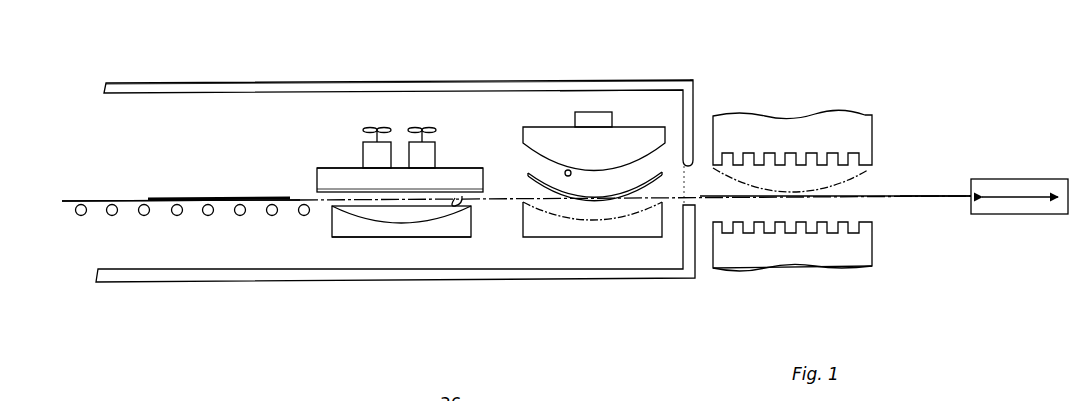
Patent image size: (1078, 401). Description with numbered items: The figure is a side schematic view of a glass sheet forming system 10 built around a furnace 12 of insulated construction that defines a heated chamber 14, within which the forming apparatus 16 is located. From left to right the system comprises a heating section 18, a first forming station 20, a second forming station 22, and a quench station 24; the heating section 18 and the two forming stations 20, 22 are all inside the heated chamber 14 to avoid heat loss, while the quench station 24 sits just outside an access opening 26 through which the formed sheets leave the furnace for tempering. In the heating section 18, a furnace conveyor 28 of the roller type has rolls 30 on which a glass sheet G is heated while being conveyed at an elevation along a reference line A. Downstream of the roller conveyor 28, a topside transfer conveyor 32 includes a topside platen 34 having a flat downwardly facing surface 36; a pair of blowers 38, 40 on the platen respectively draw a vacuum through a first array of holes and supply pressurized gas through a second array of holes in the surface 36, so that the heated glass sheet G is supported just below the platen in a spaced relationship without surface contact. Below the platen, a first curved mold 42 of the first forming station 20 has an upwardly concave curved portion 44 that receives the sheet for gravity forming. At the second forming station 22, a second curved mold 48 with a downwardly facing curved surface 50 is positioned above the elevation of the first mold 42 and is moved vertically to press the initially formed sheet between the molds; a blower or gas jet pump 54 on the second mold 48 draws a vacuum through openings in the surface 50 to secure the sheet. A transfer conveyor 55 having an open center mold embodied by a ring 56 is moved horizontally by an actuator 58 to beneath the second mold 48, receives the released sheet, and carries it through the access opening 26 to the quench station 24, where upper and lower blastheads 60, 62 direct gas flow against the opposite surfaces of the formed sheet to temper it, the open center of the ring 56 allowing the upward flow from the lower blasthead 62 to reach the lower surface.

The glass sheet forming system 10 is at (708, 60).
The furnace 12 is at (576, 77).
The heated chamber 14 is at (626, 103).
The apparatus 16 is at (530, 97).
The heating section 18 is at (252, 214).
The first forming station 20 is at (408, 254).
The second forming station 22 is at (580, 251).
The quench station 24 is at (796, 278).
The access opening 26 is at (692, 165).
The furnace conveyor 28 is at (186, 218).
The rolls 30 is at (148, 214).
The topside transfer conveyor 32 is at (325, 167).
The topside platen 34 is at (443, 170).
The downwardly facing surface 36 is at (455, 198).
The blower 38 is at (363, 150).
The blower 40 is at (437, 150).
The first curved mold 42 is at (422, 238).
The curved portion 44 is at (386, 224).
The second curved mold 48 is at (520, 130).
The downwardly facing surface 50 is at (567, 170).
The gas jet pump 54 is at (610, 120).
The transfer conveyor 55 is at (874, 195).
The transfer ring 56 is at (730, 179).
The actuator 58 is at (1034, 179).
The upper blasthead 60 is at (874, 117).
The lower blasthead 62 is at (868, 262).
The glass sheet G is at (204, 196).
The reference line A is at (915, 193).